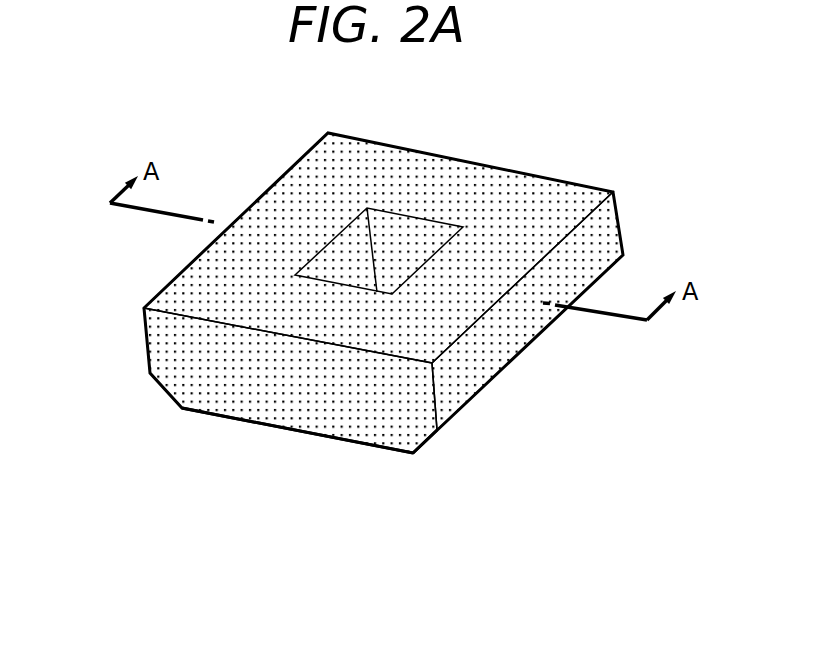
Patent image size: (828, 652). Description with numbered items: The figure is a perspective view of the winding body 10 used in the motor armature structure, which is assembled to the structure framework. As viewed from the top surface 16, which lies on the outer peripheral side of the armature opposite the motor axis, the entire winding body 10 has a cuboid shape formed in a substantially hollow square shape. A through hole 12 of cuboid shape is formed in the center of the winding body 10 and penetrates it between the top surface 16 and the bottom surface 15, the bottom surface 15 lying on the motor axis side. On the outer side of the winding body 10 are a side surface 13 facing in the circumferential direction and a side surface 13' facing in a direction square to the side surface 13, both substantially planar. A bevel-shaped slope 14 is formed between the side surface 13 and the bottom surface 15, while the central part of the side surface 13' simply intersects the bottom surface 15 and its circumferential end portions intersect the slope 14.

The winding body 10 is at (140, 393).
The through hole 12 is at (355, 252).
The side surface 13 is at (527, 318).
The side surface 13' is at (290, 418).
The slope 14 is at (427, 442).
The bottom surface 15 is at (345, 442).
The top surface 16 is at (213, 298).